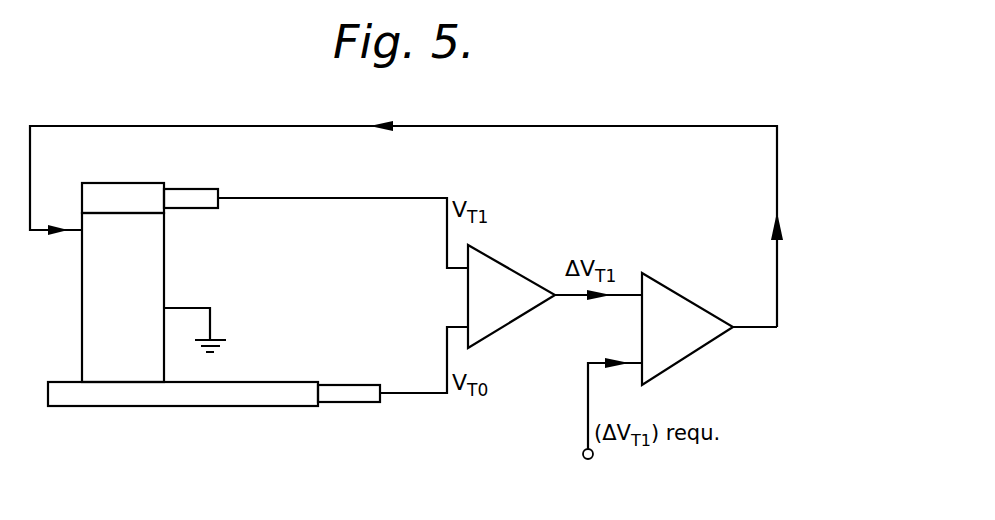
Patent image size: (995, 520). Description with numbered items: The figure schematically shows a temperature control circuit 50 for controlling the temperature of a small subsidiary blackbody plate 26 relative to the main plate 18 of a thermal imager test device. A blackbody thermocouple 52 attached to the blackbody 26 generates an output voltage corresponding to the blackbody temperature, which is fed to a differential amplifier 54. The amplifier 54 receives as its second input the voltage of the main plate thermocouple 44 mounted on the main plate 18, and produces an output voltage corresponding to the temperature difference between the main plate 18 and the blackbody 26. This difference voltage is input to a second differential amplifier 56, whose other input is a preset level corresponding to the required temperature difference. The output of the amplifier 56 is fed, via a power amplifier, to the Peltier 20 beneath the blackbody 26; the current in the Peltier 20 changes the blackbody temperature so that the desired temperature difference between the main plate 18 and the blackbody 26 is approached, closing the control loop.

The temperature control circuit 50 is at (115, 113).
The blackbody Peltier 20 is at (88, 330).
The subsidiary blackbody plate 26 is at (135, 190).
The blackbody thermocouple 52 is at (197, 194).
The main plate 18 is at (270, 384).
The main plate thermocouple 44 is at (348, 385).
The differential amplifier 54 is at (503, 306).
The second differential amplifier 56 is at (698, 304).